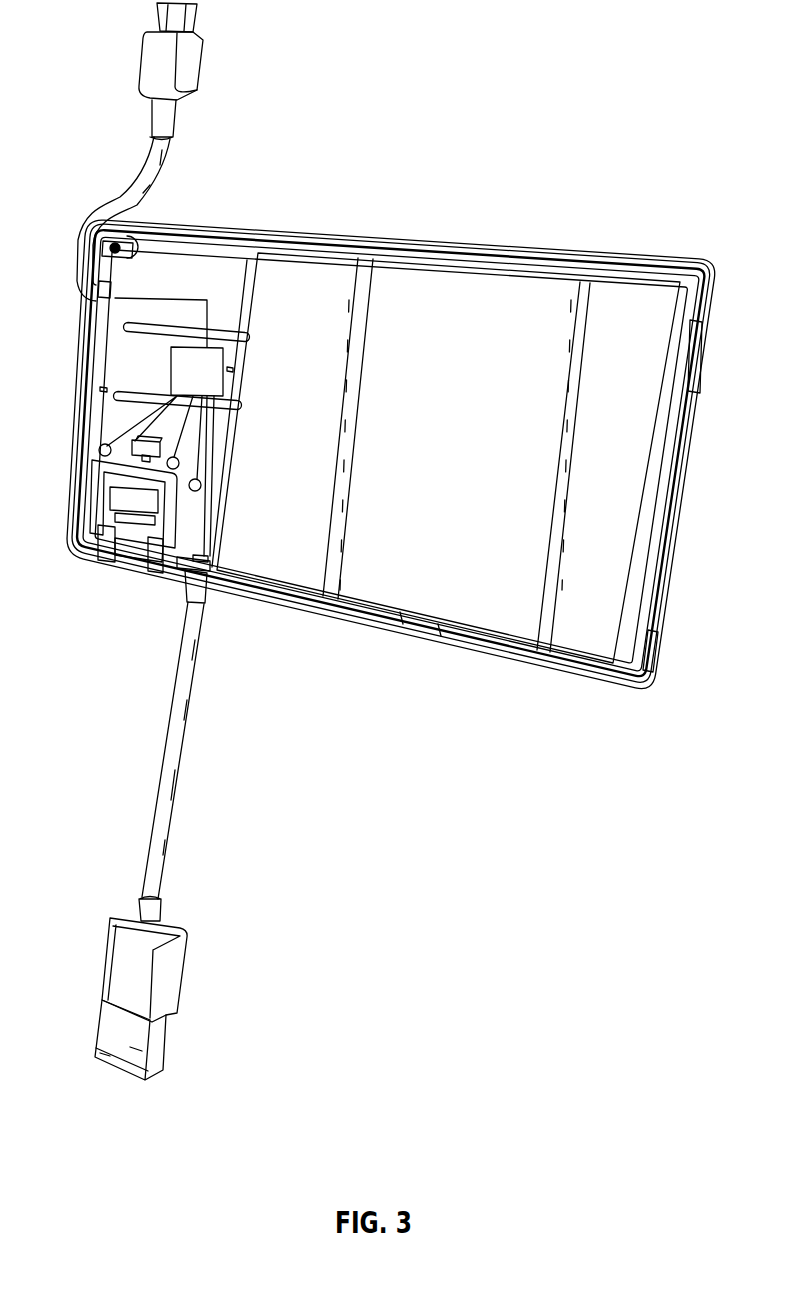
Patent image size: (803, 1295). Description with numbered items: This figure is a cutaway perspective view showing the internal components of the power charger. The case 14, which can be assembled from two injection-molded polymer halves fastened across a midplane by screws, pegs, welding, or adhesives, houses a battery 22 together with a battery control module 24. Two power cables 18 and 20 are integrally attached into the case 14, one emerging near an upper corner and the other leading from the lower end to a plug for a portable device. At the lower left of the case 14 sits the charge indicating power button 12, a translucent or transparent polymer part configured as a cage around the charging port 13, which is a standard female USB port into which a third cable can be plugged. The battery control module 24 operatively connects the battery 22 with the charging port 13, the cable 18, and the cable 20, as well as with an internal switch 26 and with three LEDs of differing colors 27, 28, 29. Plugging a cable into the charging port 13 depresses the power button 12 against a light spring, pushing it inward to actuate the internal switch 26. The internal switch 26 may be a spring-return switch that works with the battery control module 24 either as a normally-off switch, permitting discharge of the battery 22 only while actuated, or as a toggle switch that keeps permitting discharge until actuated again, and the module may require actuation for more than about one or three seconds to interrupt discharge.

The charge indicating power button 12 is at (138, 572).
The charging port 13 is at (118, 566).
The case 14 is at (502, 660).
The power cable 18 is at (200, 72).
The power cable 20 is at (178, 806).
The battery 22 is at (458, 481).
The battery control module 24 is at (210, 384).
The internal switch 26 is at (100, 447).
The LED 27 is at (201, 484).
The LED 28 is at (178, 460).
The LED 29 is at (96, 454).